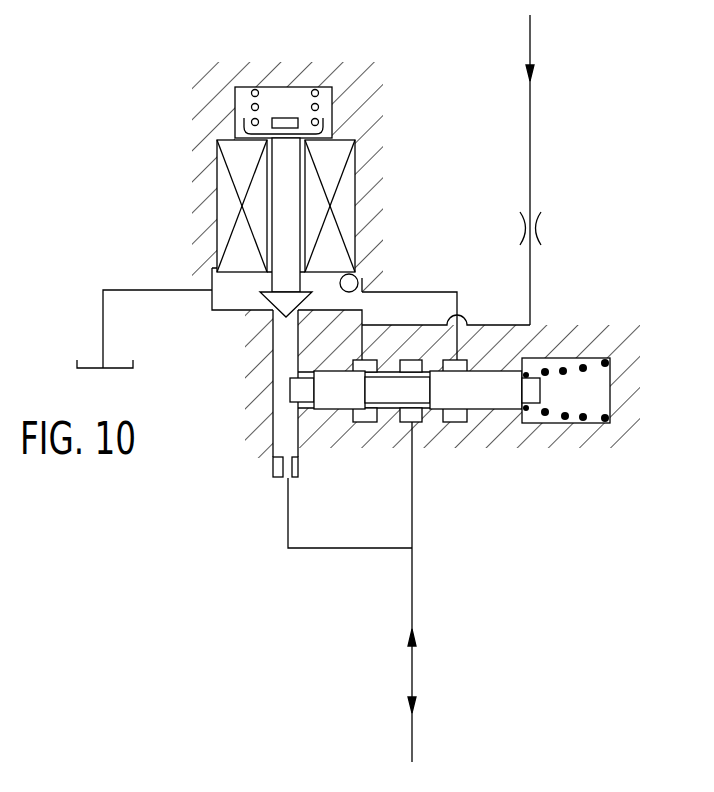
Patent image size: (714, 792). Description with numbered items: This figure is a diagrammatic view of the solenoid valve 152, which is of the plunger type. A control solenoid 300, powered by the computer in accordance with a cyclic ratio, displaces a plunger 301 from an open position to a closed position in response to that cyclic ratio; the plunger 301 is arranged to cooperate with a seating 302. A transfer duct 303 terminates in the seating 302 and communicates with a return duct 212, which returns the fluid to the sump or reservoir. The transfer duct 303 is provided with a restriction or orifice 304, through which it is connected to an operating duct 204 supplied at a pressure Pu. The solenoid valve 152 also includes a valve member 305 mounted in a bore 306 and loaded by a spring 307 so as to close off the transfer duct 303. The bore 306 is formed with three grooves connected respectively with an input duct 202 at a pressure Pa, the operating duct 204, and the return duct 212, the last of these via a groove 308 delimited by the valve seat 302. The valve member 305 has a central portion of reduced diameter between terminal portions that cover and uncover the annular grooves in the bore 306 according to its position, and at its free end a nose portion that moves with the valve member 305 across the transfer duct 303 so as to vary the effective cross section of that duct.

The solenoid valve 152 is at (176, 107).
The control solenoid 300 is at (222, 195).
The plunger 301 is at (292, 238).
The seating 302 is at (240, 314).
The transfer duct 303 is at (282, 432).
The restriction or orifice 304 is at (291, 480).
The valve member 305 is at (494, 405).
The bore 306 is at (480, 376).
The spring 307 is at (583, 368).
The groove 308 is at (356, 284).
The return duct 212 is at (103, 308).
The input duct 202 is at (528, 115).
The operating duct 204 is at (412, 673).